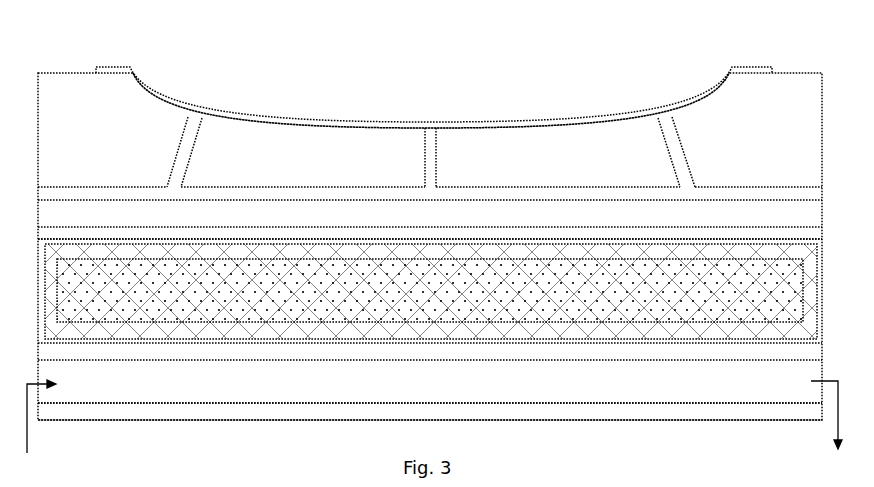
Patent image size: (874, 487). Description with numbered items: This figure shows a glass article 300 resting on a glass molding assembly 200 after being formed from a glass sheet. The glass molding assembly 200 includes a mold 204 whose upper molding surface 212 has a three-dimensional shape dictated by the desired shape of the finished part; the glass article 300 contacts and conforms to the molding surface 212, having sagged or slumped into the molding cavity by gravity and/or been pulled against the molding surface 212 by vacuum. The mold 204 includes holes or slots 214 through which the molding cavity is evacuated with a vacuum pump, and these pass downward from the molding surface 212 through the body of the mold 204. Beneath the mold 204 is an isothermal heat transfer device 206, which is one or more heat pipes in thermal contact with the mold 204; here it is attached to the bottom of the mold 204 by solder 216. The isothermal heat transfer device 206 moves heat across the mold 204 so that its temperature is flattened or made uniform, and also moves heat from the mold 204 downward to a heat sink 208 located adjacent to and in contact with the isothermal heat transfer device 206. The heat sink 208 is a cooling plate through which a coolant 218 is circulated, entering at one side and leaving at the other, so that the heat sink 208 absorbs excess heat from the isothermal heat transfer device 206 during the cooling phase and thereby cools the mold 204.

The glass molding assembly 200 is at (440, 245).
The mold 204 is at (69, 81).
The isothermal heat transfer device 206 is at (108, 332).
The heat sink 208 is at (210, 413).
The molding surface 212 is at (558, 128).
The holes or slots 214 is at (182, 152).
The solder 216 is at (812, 232).
The coolant 218 is at (434, 428).
The glass article 300 is at (353, 123).